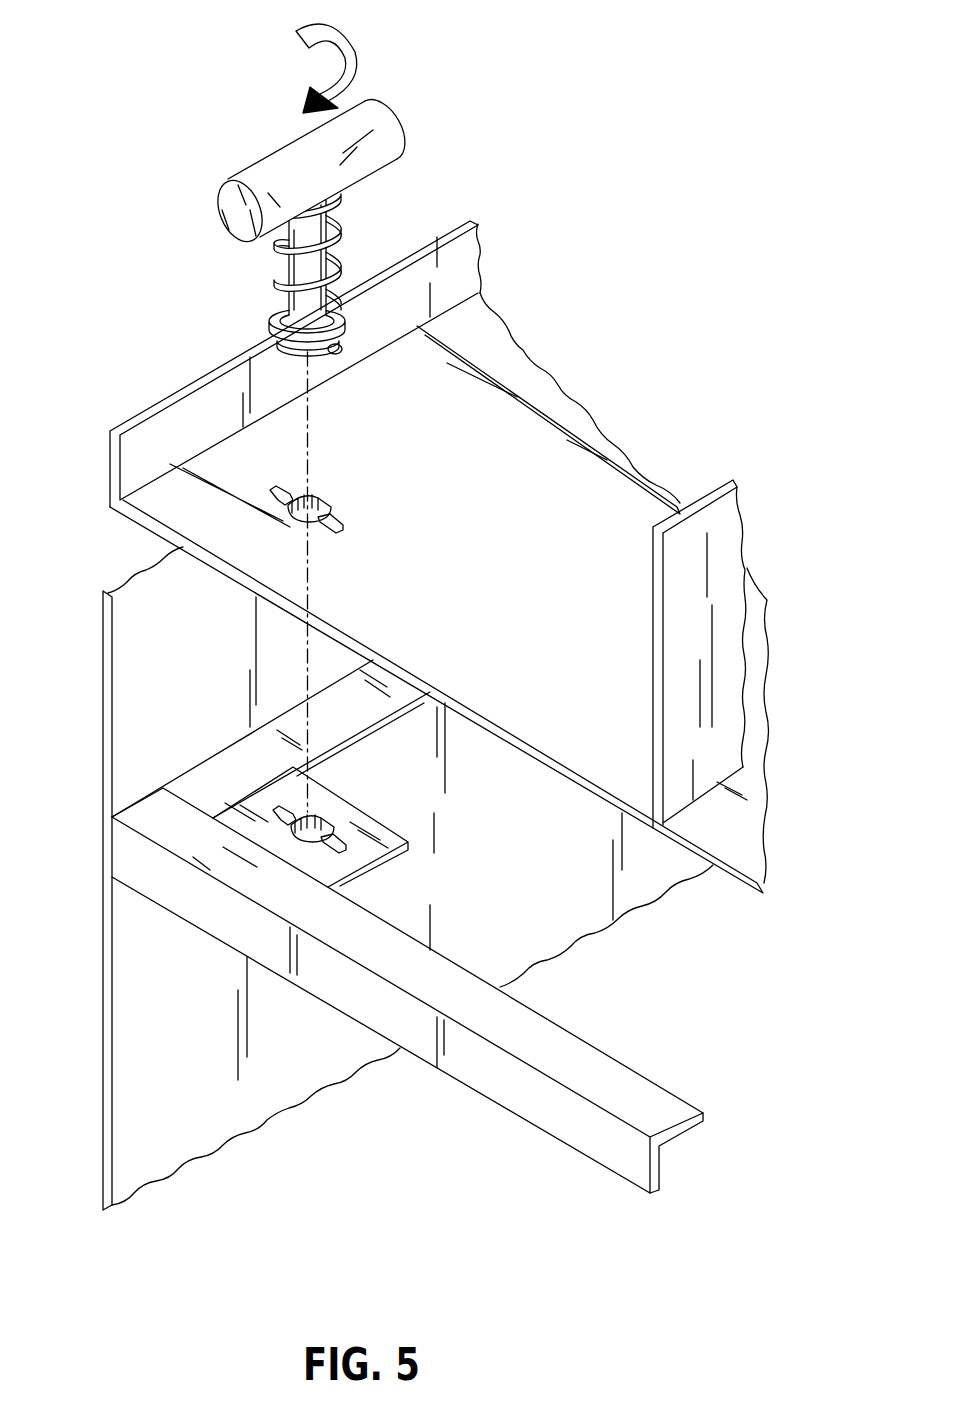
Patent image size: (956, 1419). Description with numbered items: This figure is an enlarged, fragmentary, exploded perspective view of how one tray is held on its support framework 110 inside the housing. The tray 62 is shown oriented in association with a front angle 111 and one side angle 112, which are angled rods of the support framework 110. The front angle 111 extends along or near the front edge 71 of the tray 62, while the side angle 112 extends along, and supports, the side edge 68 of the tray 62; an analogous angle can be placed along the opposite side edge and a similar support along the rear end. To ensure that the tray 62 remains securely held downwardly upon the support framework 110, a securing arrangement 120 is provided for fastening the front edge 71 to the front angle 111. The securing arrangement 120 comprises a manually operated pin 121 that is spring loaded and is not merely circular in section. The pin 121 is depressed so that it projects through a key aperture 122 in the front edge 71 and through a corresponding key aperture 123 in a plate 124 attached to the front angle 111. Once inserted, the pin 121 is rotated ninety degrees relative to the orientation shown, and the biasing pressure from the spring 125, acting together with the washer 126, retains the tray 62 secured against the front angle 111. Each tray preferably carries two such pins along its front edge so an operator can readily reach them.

The tray 62 is at (587, 450).
The side edge 68 is at (108, 509).
The front edge 71 is at (367, 650).
The support framework 110 is at (478, 1098).
The front angle 111 is at (596, 1060).
The side angle 112 is at (347, 728).
The securing arrangement 120 is at (357, 212).
The manually operated pin 121 is at (262, 157).
The key aperture 122 is at (322, 496).
The key aperture 123 is at (311, 816).
The plate 124 is at (367, 868).
The spring 125 is at (342, 266).
The washer 126 is at (348, 321).